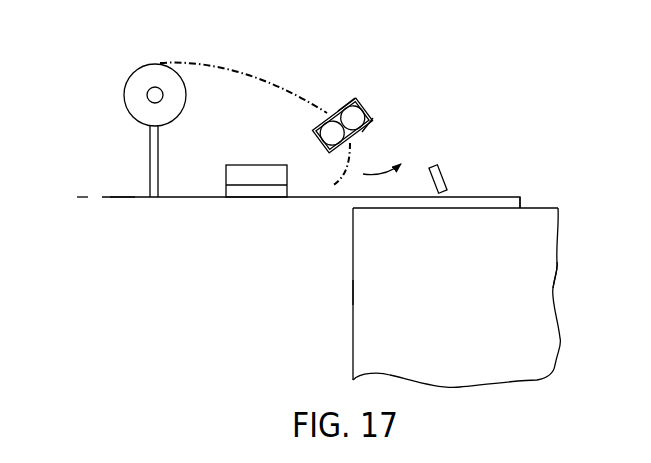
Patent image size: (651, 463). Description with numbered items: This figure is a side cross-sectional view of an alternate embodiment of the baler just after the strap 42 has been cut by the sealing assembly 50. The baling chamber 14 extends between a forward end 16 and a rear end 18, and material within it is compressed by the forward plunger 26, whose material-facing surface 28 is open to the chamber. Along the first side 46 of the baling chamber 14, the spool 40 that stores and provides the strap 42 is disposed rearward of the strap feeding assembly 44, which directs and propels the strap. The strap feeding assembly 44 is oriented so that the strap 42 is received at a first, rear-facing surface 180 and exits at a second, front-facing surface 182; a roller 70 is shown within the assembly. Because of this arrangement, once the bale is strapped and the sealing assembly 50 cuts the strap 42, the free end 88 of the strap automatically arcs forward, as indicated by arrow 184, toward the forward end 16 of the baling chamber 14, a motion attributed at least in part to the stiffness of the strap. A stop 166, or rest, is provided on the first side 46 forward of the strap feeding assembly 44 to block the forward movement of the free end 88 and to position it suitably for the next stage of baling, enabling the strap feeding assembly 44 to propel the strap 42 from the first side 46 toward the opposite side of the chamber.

The baling chamber 14 is at (213, 299).
The forward end 16 is at (545, 202).
The rear end 18 is at (71, 219).
The forward plunger 26 is at (545, 267).
The material-facing surface 28 is at (353, 292).
The spool 40 is at (135, 73).
The strap 42 is at (257, 76).
The strap feeding assembly 44 is at (358, 100).
The first side 46 is at (122, 197).
The sealing assembly 50 is at (257, 165).
The roller 70 is at (356, 116).
The free end 88 is at (340, 171).
The stop 166 is at (445, 176).
The rear-facing surface 180 is at (342, 104).
The front-facing surface 182 is at (358, 127).
The arrow 184 is at (382, 172).